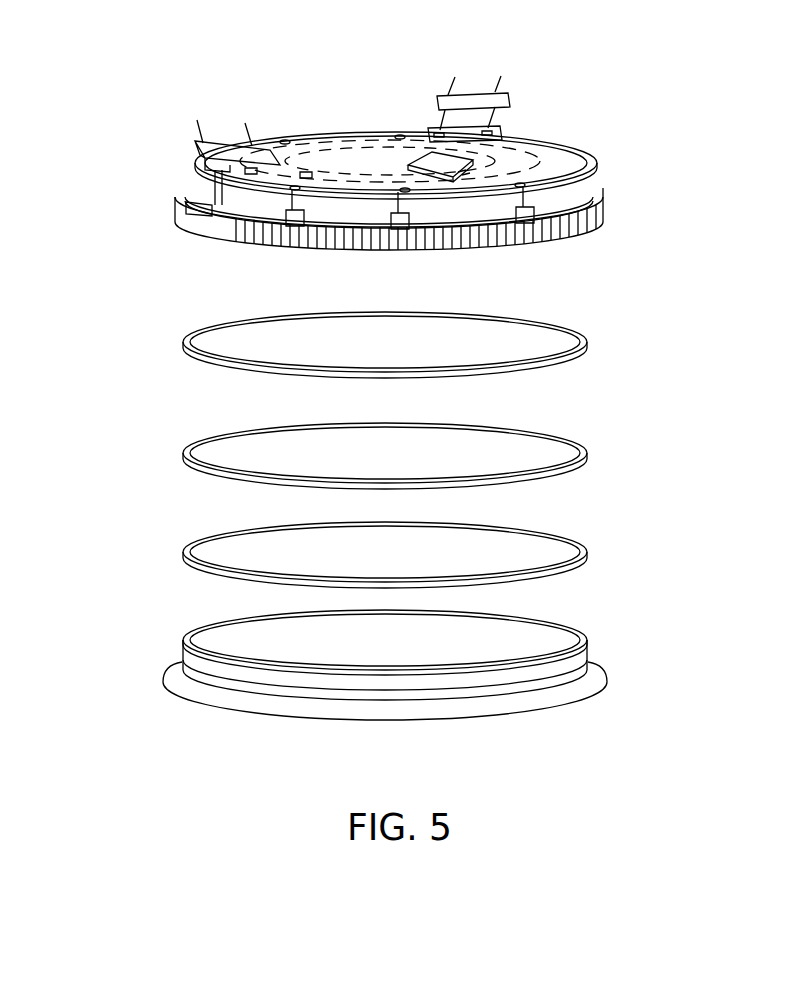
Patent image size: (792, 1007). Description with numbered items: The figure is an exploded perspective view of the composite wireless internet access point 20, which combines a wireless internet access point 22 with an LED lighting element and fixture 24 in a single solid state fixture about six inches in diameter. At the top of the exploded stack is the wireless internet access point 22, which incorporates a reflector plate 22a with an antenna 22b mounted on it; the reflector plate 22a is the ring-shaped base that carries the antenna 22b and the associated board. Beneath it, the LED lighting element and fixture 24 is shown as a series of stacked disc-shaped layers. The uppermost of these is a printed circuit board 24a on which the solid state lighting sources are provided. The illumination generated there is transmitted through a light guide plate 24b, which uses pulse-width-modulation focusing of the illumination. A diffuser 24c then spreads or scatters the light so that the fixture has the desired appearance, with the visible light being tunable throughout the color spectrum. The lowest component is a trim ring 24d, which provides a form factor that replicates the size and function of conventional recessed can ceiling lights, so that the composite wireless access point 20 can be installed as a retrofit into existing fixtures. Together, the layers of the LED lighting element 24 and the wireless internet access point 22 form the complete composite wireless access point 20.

The wireless internet access point 20 is at (513, 737).
The wireless internet access point 22 is at (310, 127).
The reflector plate 22a is at (611, 178).
The antenna 22b is at (525, 153).
The LED lighting element and fixture 24 is at (160, 305).
The printed circuit board 24a is at (607, 340).
The light guide plate 24b is at (607, 455).
The diffuser 24c is at (608, 537).
The trim ring 24d is at (607, 650).